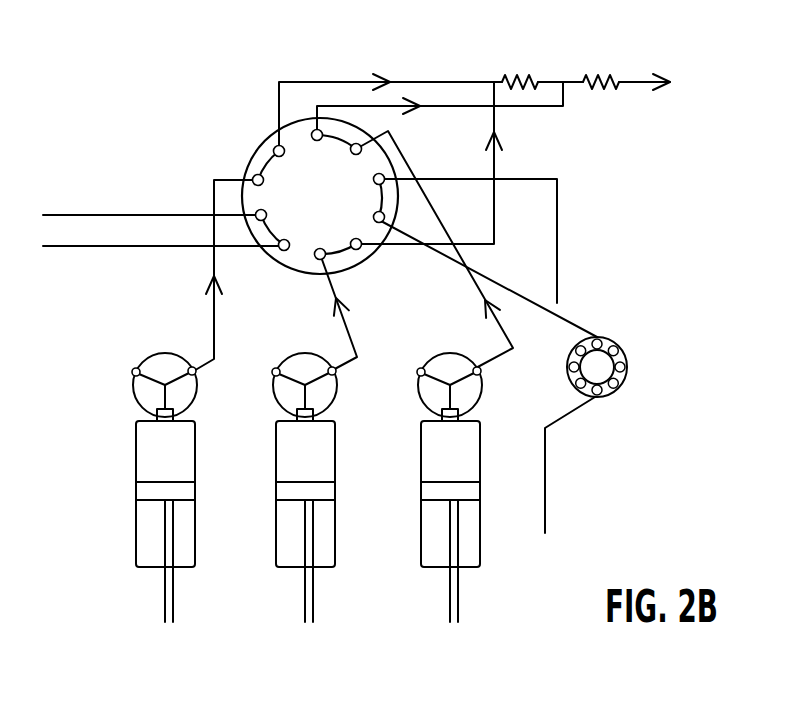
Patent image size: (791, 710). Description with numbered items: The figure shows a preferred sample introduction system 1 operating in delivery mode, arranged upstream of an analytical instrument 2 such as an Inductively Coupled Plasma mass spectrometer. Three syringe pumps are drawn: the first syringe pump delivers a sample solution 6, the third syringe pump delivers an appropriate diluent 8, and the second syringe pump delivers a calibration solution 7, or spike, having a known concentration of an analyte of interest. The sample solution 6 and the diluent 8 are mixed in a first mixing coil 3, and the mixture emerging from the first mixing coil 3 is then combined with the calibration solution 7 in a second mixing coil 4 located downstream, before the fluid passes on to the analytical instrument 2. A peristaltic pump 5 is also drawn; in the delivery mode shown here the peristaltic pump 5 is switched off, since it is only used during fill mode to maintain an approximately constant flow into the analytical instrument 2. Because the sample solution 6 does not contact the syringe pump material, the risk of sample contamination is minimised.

The sample introduction system 1 is at (115, 482).
The analytical instrument 2 is at (655, 83).
The first mixing coil 3 is at (536, 74).
The second mixing coil 4 is at (617, 74).
The peristaltic pump 5 is at (600, 362).
The sample solution 6 is at (216, 334).
The calibration solution 7 is at (502, 328).
The diluent 8 is at (348, 329).